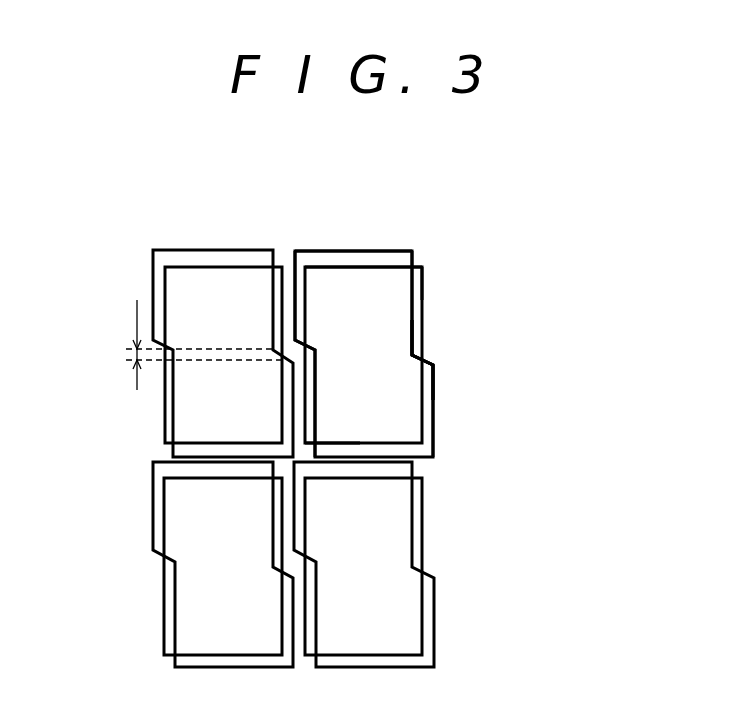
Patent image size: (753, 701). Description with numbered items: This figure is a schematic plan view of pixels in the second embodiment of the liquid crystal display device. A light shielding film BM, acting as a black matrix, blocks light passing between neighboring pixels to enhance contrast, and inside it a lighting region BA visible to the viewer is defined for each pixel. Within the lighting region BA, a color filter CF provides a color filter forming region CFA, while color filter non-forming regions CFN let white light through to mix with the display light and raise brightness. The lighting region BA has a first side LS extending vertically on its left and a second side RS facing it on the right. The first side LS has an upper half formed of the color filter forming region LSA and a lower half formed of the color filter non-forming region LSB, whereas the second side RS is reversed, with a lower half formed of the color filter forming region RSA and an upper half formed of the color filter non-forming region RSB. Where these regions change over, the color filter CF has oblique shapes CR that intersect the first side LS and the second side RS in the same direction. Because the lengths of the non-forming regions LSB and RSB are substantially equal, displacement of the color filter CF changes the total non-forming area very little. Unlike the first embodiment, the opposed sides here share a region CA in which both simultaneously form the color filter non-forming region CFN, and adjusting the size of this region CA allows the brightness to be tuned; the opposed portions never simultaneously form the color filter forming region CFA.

The first side LS is at (412, 170).
The color filter forming region of the first side LSA is at (305, 283).
The color filter non-forming region of the first side LSB is at (305, 395).
The color filter CF is at (303, 252).
The lighting region BA is at (415, 264).
The color filter non-forming region CFN is at (420, 287).
The color filter forming region CFA is at (402, 316).
The second side RS is at (602, 312).
The color filter non-forming region of the second side RSB is at (423, 341).
The color filter forming region of the second side RSA is at (423, 392).
The oblique shape CR is at (427, 363).
The overlapping non-forming region CA is at (128, 356).
The light shielding film BM is at (165, 457).